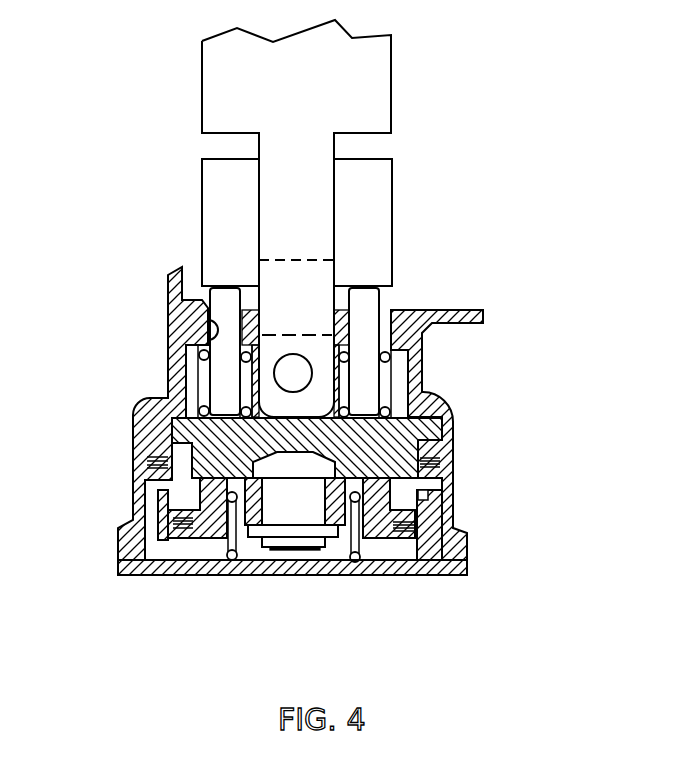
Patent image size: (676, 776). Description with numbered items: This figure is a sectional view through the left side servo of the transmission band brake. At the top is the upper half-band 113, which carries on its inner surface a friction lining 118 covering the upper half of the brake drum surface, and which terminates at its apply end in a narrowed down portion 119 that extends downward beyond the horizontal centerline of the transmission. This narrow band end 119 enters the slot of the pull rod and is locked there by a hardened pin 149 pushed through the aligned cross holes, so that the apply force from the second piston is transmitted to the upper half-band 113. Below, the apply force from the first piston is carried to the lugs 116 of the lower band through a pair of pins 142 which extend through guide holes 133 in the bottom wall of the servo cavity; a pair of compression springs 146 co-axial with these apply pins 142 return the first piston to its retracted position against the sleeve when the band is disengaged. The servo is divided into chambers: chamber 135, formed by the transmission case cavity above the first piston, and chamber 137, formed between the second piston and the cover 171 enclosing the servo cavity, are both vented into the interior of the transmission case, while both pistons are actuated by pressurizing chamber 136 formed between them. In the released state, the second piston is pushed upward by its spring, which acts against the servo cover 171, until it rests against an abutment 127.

The upper half-band 113 is at (356, 81).
The lug 116 is at (365, 223).
The friction lining 118 is at (232, 225).
The narrowed down portion of the band 119 is at (308, 195).
The abutment 127 is at (150, 449).
The guide holes 133 is at (203, 340).
The chamber 135 is at (402, 423).
The chamber 136 is at (402, 497).
The chamber 137 is at (383, 553).
The pins 142 is at (225, 302).
The compression springs 146 is at (385, 395).
The hardened pin 149 is at (293, 373).
The cover 171 is at (323, 575).